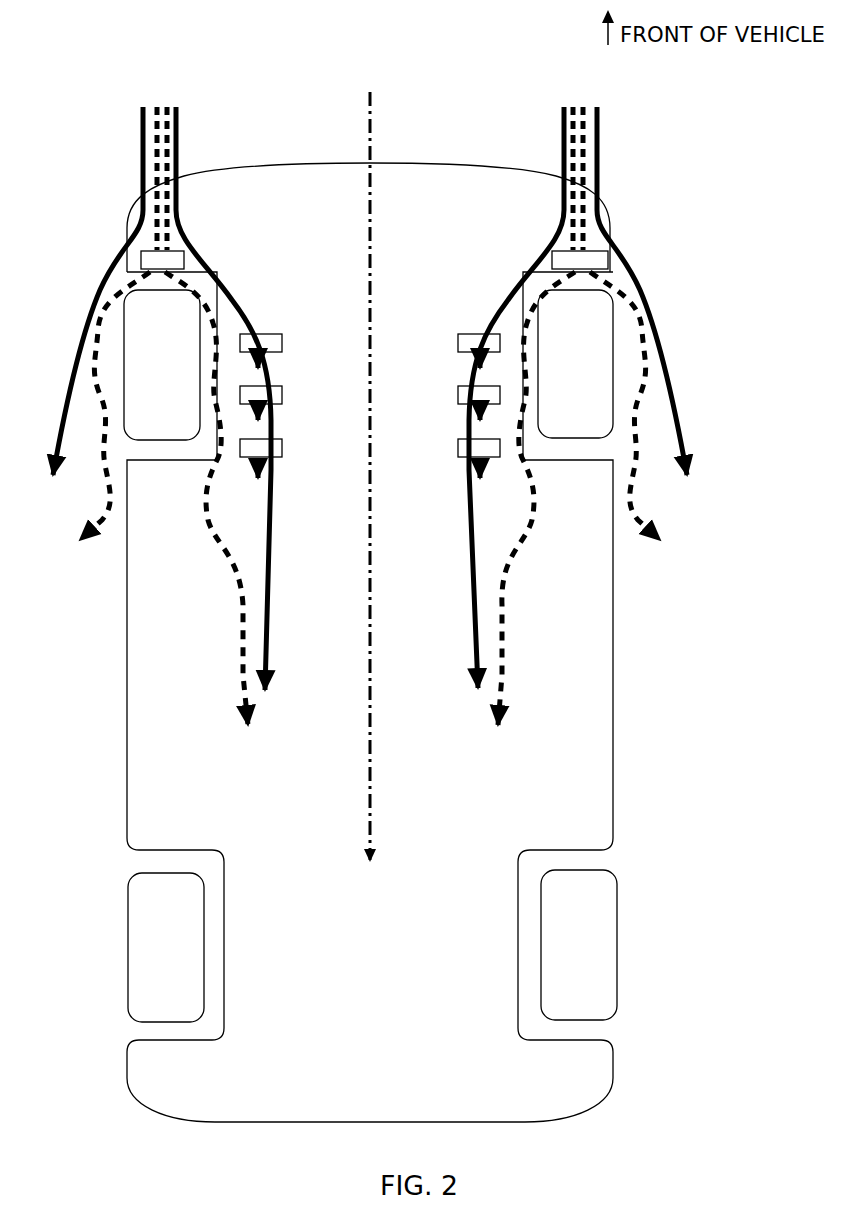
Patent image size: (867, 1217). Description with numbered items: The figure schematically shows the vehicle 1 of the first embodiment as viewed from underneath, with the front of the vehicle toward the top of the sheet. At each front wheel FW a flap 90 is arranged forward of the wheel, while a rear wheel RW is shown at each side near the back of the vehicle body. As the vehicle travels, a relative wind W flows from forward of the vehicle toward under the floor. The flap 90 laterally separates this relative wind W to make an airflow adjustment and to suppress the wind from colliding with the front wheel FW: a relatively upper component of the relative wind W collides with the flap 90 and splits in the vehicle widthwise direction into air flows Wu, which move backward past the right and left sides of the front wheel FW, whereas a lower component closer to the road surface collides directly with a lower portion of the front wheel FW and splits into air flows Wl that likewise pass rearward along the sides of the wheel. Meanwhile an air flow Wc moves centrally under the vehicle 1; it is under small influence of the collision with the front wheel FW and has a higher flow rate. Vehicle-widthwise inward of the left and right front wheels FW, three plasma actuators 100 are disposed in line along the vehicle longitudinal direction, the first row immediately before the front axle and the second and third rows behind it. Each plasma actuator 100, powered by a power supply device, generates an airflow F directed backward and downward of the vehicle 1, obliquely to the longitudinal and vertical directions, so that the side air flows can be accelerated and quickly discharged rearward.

The vehicle 1 is at (322, 140).
The plasma actuator 100 is at (477, 325).
The flap 90 is at (606, 253).
The relative wind W is at (370, 376).
The front wheel FW is at (612, 353).
The rear wheel RW is at (614, 954).
The air flow Wc is at (403, 275).
The air flow Wu is at (370, 441).
The air flow Wl is at (370, 498).
The airflow F is at (369, 420).